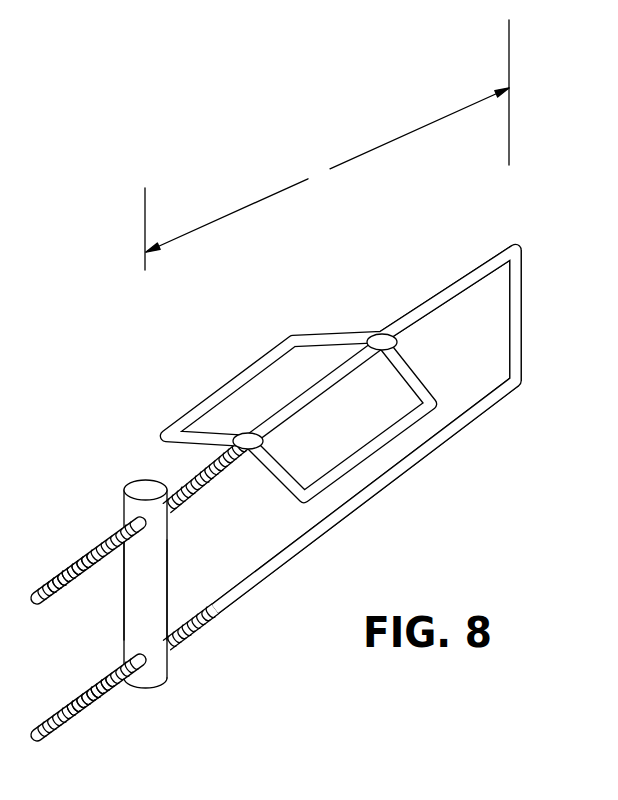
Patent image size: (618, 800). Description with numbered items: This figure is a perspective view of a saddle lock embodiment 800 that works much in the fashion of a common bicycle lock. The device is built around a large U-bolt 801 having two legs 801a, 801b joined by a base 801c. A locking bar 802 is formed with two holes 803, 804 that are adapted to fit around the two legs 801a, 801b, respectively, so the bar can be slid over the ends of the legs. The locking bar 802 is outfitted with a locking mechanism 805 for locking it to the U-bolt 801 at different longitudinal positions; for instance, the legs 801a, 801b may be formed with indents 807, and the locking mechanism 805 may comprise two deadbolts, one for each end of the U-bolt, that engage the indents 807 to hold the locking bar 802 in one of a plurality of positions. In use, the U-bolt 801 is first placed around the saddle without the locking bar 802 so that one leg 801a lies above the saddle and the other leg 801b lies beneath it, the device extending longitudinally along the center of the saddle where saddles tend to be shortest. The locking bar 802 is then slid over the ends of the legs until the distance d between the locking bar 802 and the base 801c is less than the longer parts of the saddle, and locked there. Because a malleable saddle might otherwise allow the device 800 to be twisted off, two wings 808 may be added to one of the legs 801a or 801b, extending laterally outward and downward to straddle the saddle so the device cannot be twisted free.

The embodiment 800 is at (243, 162).
The U-bolt 801 is at (447, 438).
The leg 801a is at (436, 291).
The leg 801b is at (323, 523).
The base 801c is at (522, 332).
The locking bar 802 is at (158, 580).
The hole 803 is at (143, 522).
The hole 804 is at (143, 661).
The locking mechanism 805 is at (140, 457).
The indents 807 is at (88, 550).
The wings 808 is at (430, 385).